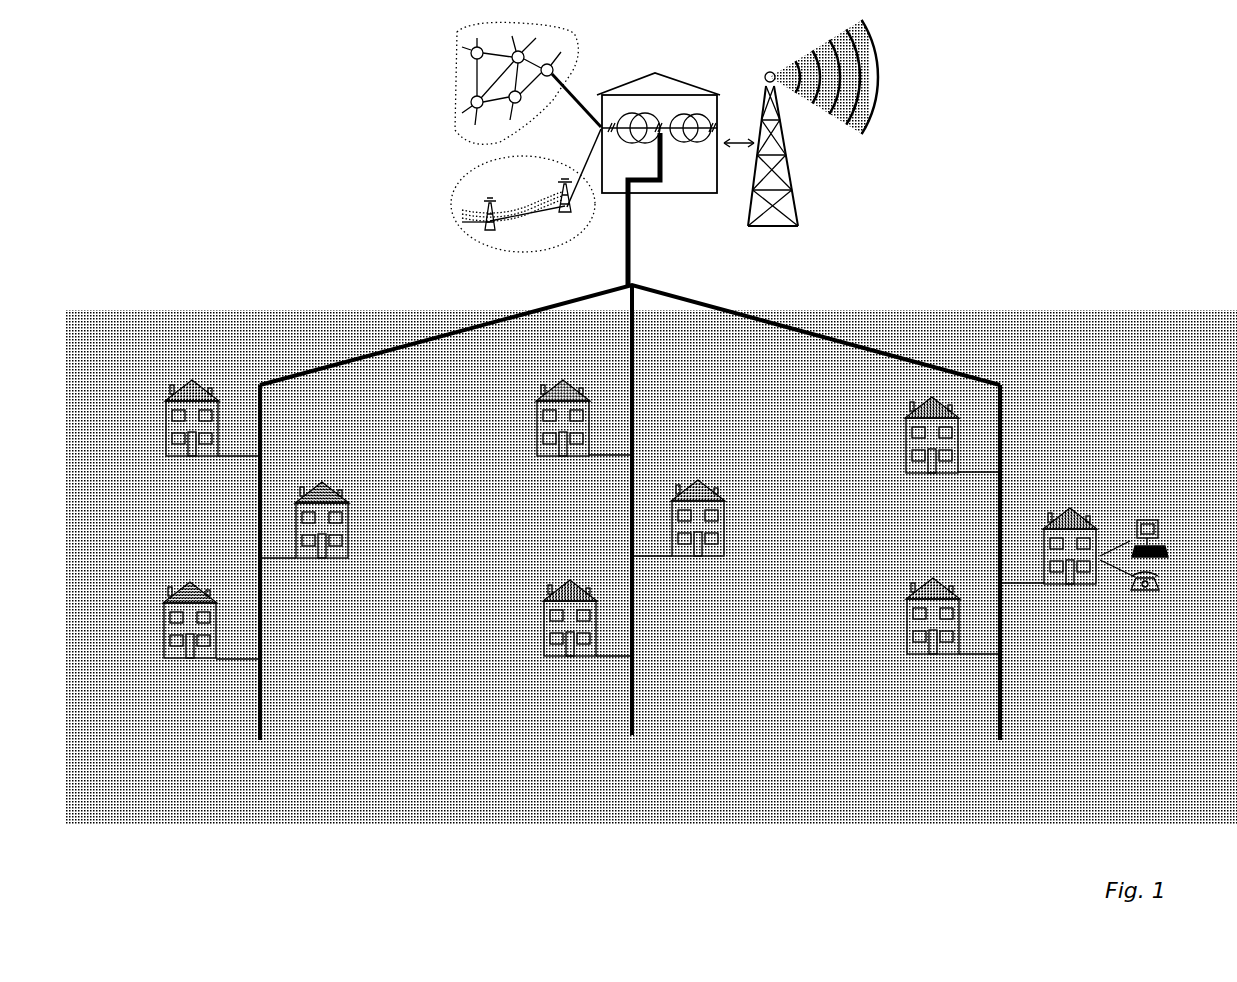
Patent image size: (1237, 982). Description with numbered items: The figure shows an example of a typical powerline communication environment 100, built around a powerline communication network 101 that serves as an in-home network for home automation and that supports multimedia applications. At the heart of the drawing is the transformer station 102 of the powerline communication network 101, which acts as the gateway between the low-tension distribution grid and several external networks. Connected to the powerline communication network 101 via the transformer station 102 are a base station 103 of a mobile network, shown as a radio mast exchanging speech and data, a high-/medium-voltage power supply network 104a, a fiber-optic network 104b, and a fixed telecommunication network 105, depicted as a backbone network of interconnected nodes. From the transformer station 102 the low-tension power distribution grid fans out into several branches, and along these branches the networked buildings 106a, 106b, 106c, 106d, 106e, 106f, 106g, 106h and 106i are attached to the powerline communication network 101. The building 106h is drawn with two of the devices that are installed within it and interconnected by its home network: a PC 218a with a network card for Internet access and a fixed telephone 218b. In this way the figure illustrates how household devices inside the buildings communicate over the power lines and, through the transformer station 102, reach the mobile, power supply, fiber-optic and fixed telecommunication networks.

The powerline communication environment 100 is at (651, 412).
The powerline communication network 101 is at (651, 551).
The transformer station 102 is at (682, 158).
The base station of a mobile network 103 is at (813, 120).
The high-/medium-voltage power supply network 104a is at (526, 190).
The fiber-optic network 104b is at (513, 217).
The fixed telecommunication network 105 is at (528, 72).
The networked building 106a is at (212, 399).
The networked building 106b is at (334, 520).
The networked building 106c is at (211, 605).
The networked building 106d is at (584, 398).
The networked building 106e is at (704, 518).
The networked building 106f is at (587, 600).
The networked building 106g is at (921, 431).
The networked building 106h is at (1049, 527).
The house / subscriber premises 106i is at (953, 599).
The PC with network card for Internet access 218a is at (1136, 524).
The fixed telephone 218b is at (1132, 593).